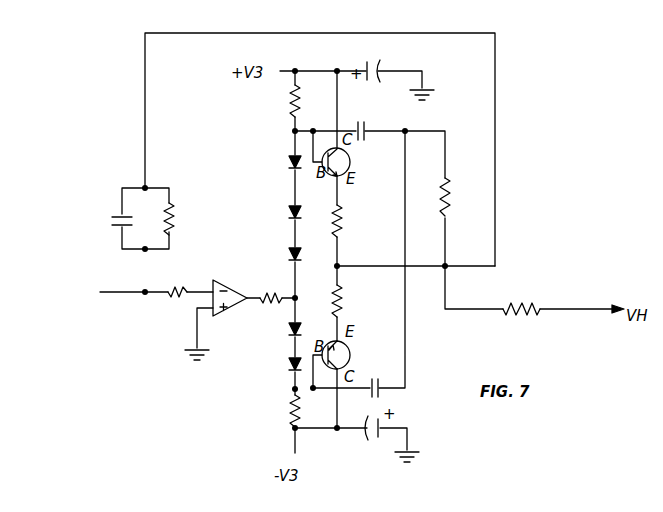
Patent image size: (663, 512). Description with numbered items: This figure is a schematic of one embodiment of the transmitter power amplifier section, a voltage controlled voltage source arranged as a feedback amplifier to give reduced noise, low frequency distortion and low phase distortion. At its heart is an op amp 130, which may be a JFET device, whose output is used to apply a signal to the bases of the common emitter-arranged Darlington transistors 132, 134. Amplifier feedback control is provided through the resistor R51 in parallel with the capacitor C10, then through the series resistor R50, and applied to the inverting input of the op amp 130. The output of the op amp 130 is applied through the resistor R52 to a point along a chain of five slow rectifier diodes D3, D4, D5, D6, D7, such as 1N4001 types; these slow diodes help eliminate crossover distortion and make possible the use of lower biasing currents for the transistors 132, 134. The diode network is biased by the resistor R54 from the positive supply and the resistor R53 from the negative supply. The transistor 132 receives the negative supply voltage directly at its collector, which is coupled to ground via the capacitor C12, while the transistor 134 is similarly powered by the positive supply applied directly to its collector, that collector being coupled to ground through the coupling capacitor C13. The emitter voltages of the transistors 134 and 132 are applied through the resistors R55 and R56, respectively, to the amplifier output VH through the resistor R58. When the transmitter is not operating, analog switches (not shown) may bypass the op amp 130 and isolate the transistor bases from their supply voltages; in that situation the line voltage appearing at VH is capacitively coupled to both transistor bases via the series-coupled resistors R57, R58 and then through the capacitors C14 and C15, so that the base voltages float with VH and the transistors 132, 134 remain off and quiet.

The capacitor C10 is at (113, 216).
The resistor R51 is at (173, 219).
The series resistor R50 is at (172, 300).
The op amp 130 is at (236, 310).
The resistor R52 is at (277, 296).
The slow rectifier diode D3 is at (288, 164).
The slow rectifier diode D4 is at (288, 213).
The slow rectifier diode D5 is at (288, 255).
The slow rectifier diode D6 is at (288, 330).
The slow rectifier diode D7 is at (288, 365).
The resistor R54 is at (288, 104).
The resistor R53 is at (290, 410).
The coupling capacitor C13 is at (389, 51).
The capacitor C15 is at (365, 120).
The Darlington transistor 134 is at (351, 158).
The resistor R55 is at (340, 224).
The resistor R56 is at (341, 302).
The resistor R57 is at (446, 198).
The resistor R58 is at (522, 297).
The Darlington transistor 132 is at (350, 352).
The capacitor C14 is at (381, 368).
The capacitor C12 is at (369, 441).